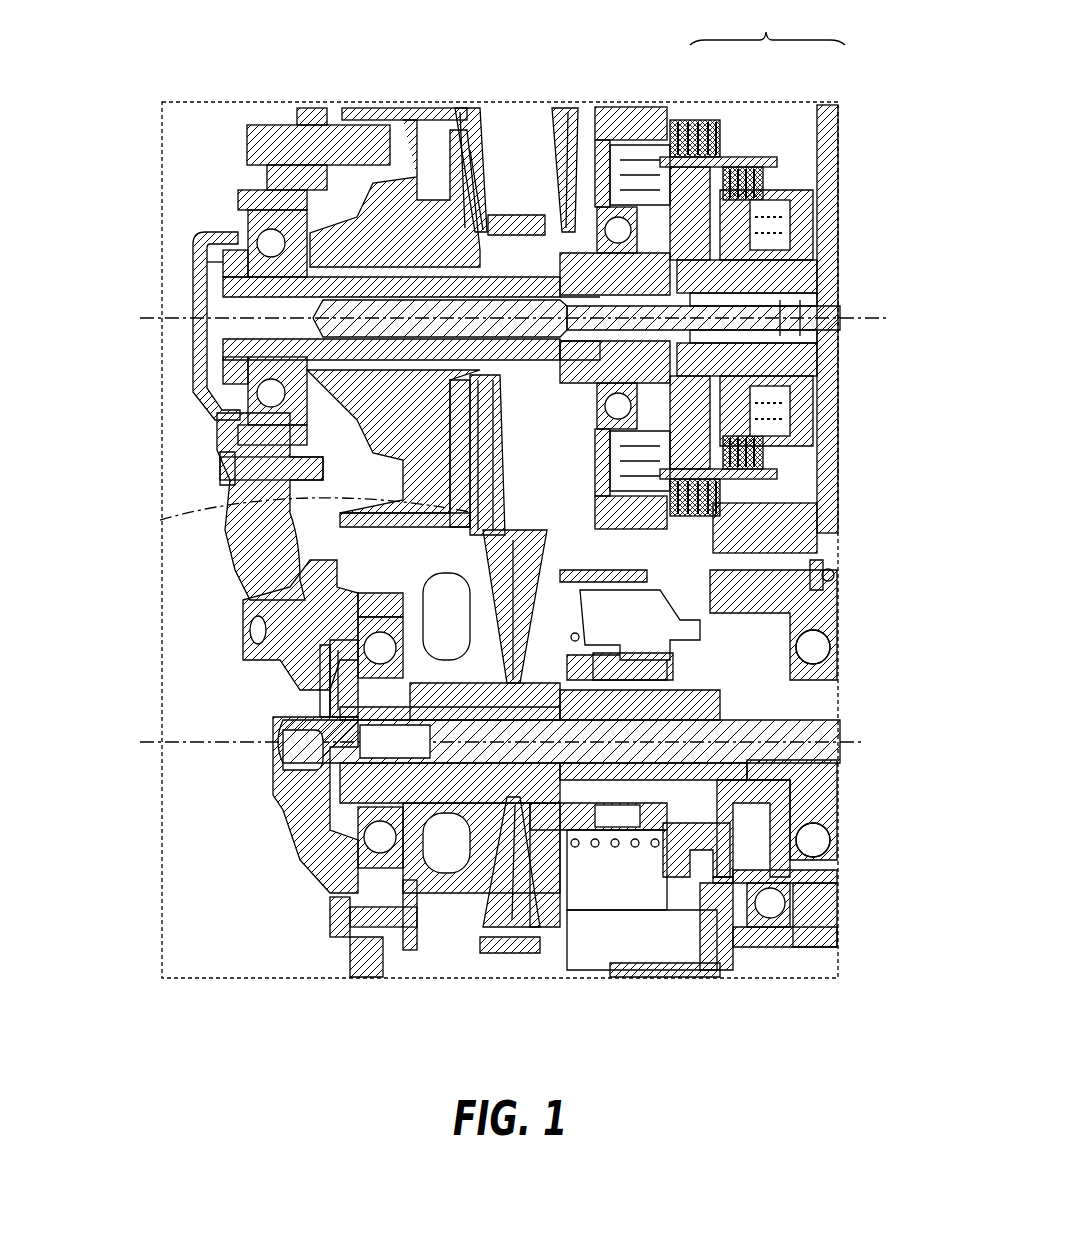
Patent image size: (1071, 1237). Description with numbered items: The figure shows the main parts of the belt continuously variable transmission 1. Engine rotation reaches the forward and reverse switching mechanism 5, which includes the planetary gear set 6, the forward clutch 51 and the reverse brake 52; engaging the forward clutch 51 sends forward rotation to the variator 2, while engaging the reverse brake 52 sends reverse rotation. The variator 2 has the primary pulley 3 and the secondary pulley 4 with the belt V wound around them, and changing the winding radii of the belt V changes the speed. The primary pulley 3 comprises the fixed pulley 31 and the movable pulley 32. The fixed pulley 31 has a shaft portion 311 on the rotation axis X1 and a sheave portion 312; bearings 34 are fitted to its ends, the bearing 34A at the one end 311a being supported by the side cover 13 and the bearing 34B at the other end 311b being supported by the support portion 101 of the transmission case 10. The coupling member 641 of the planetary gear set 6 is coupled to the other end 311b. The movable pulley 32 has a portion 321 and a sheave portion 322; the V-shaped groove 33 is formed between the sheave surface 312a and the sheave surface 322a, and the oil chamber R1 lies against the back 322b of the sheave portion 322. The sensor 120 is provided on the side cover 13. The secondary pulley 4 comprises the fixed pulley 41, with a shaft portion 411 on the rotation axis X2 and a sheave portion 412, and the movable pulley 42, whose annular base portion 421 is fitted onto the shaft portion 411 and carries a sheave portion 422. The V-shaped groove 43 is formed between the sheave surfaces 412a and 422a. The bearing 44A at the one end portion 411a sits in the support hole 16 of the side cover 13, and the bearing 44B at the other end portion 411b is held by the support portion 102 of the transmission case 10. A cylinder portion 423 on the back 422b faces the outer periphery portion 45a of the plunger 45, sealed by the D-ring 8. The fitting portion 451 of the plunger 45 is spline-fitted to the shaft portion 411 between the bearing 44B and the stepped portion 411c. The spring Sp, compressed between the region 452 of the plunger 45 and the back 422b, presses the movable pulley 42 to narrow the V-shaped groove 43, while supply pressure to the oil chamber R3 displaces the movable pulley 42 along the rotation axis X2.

The continuously variable transmission 1 is at (110, 112).
The variator 2 is at (98, 598).
The primary pulley 3 is at (217, 435).
The secondary pulley 4 is at (218, 633).
The forward and reverse switching mechanism 5 is at (767, 22).
The planetary gear set 6 is at (725, 125).
The D-ring 8 is at (640, 910).
The transmission case 10 is at (820, 530).
The side cover 13 is at (195, 245).
The support hole 16 is at (348, 615).
The fixed pulley 31 is at (575, 115).
The movable pulley 32 is at (455, 112).
The V-shaped groove 33 is at (526, 191).
The support member 34 is at (391, 310).
The bearing 34A is at (248, 228).
The bearing 34B is at (597, 235).
The fixed pulley 41 is at (480, 960).
The movable pulley 42 is at (535, 960).
The V-shaped groove 43 is at (528, 902).
The bearing 44A is at (400, 670).
The bearing 44B is at (832, 645).
The plunger 45 is at (730, 830).
The outer periphery portion 45a is at (645, 872).
The forward clutch 51 is at (770, 150).
The reverse brake 52 is at (695, 122).
The support portion 101 is at (622, 500).
The support portion 102 is at (836, 580).
The sensor 120 is at (247, 145).
The shaft portion 311 is at (478, 435).
The one end 311a is at (207, 262).
The other end 311b is at (575, 288).
The sheave portion 312 is at (480, 475).
The sheave surface 312a is at (566, 135).
The input shaft portion 321 is at (440, 318).
The sheave portion 322 is at (642, 320).
The sheave surface 322a is at (478, 135).
The back 322b is at (508, 172).
The shaft portion 411 is at (290, 795).
The one end portion 411a is at (320, 690).
The other end portion 411b is at (840, 712).
The stepped portion 411c is at (725, 658).
The sheave portion 412 is at (340, 905).
The sheave surface 412a is at (495, 955).
The annular base portion 421 is at (600, 703).
The sheave portion 422 is at (520, 635).
The sheave surface 422a is at (525, 955).
The back 422b is at (583, 683).
The cylinder portion 423 is at (600, 912).
The fitting portion 451 is at (775, 698).
The region 452 is at (696, 836).
The coupling member 641 is at (595, 348).
The oil chamber R1 is at (450, 195).
The oil chamber R3 is at (612, 897).
The spring Sp is at (598, 740).
The belt V is at (200, 522).
The rotation axis X1 is at (121, 313).
The rotation axis X2 is at (121, 740).